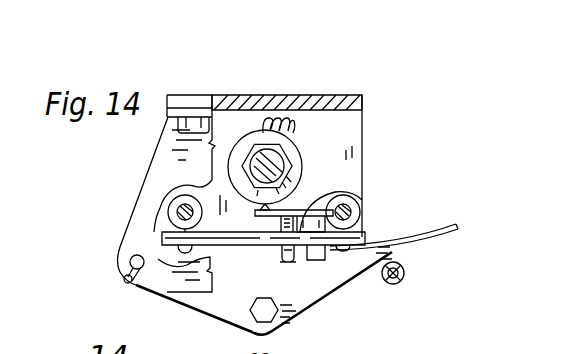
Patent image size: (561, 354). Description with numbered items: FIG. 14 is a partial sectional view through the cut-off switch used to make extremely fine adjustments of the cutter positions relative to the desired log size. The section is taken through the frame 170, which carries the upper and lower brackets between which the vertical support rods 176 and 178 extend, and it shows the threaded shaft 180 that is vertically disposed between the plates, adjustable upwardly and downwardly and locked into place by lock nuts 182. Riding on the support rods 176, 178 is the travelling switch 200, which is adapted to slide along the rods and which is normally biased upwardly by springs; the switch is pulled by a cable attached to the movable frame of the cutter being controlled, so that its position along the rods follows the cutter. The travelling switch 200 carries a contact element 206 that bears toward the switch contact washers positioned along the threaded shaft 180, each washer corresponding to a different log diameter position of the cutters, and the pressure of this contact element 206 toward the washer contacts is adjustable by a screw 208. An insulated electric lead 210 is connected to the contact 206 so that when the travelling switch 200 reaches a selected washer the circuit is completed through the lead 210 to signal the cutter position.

The frame 170 is at (318, 104).
The vertical support rod 176 is at (350, 210).
The vertical support rod 178 is at (177, 208).
The threaded shaft 180 is at (258, 147).
The lock nuts 182 is at (288, 162).
The travelling switch 200 is at (255, 215).
The contact element 206 is at (300, 213).
The screw 208 is at (286, 264).
The insulated electric lead 210 is at (454, 236).